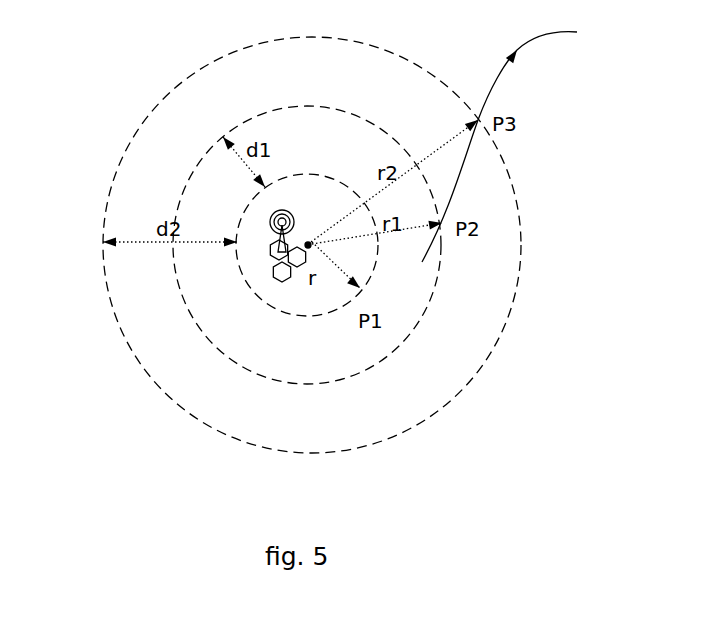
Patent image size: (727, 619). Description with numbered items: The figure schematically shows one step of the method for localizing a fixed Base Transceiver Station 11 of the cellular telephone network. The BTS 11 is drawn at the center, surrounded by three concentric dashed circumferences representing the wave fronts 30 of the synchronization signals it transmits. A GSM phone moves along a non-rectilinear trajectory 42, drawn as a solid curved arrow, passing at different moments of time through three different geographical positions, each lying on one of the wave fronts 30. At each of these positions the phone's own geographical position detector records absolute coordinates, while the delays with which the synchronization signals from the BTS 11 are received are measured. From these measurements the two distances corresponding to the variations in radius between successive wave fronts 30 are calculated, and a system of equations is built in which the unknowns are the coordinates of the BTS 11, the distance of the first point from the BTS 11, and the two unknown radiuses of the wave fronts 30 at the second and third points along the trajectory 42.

The wave fronts 30 is at (317, 173).
The Base Transceiver Station 11 is at (272, 280).
The non-rectilinear trajectory 42 is at (512, 67).